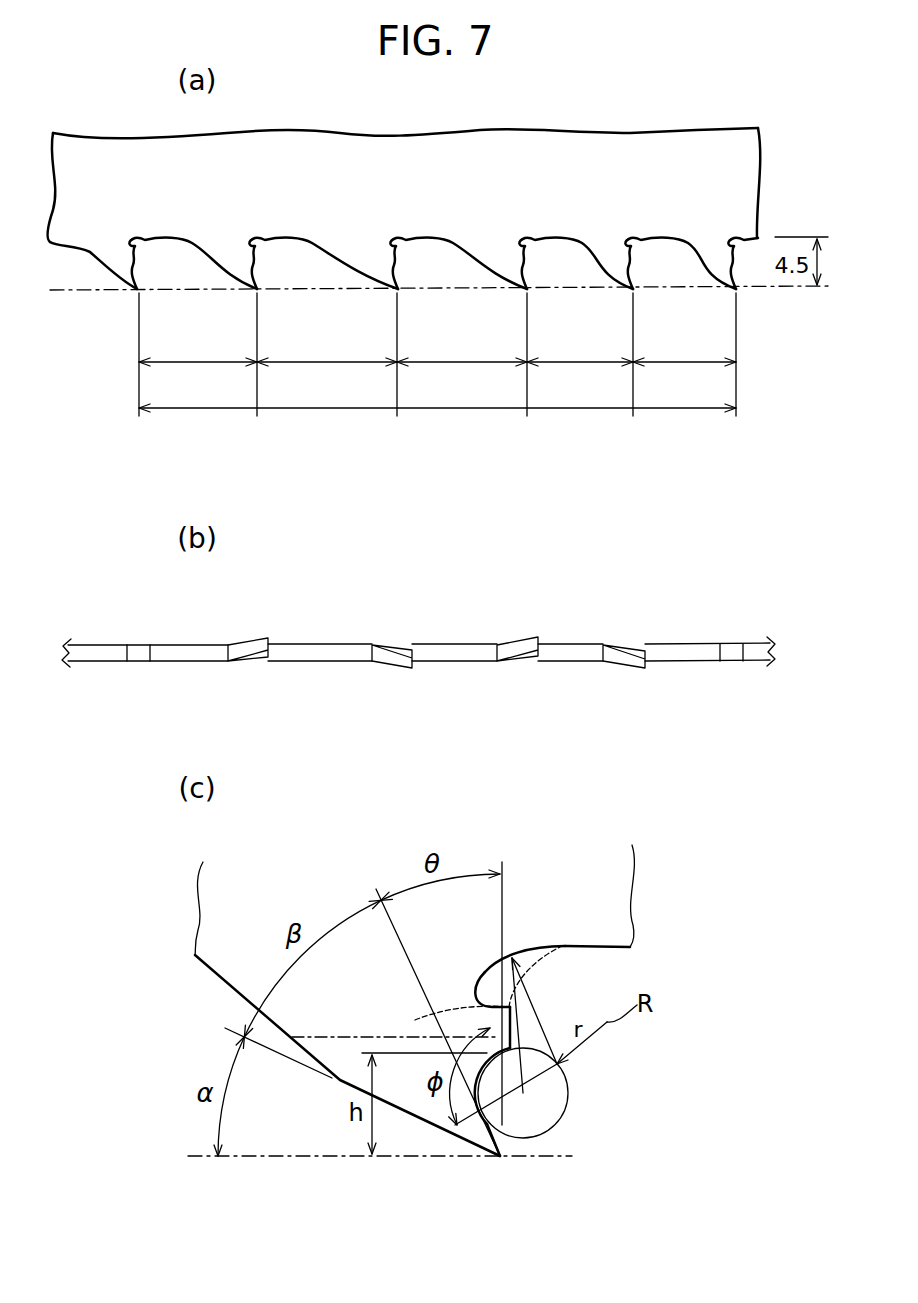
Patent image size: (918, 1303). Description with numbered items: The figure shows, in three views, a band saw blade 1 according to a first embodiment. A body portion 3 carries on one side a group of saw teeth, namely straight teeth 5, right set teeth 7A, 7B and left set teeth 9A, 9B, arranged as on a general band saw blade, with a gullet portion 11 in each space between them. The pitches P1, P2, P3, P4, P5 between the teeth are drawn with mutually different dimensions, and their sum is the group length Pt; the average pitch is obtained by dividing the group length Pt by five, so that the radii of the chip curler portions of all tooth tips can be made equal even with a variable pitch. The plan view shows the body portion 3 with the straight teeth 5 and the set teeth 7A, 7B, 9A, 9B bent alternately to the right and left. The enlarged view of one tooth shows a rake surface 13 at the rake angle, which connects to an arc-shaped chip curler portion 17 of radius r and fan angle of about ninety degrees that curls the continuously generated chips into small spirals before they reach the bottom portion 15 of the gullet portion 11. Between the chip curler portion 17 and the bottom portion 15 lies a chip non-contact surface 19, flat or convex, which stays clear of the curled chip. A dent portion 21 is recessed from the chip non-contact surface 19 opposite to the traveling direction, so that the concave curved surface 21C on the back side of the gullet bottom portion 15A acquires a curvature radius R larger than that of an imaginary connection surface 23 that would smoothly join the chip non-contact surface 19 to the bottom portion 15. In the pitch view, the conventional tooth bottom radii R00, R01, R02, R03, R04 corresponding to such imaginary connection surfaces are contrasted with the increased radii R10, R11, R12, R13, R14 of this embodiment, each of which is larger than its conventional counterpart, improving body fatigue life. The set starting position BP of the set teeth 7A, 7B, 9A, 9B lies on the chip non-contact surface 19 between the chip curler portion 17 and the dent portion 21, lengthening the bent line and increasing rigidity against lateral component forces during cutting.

The band saw blade 1 is at (777, 125).
The body portion 3 is at (753, 150).
The straight teeth 5 is at (118, 290).
The right set tooth 7A is at (613, 288).
The right set tooth 7B is at (370, 292).
The left set tooth 9A is at (508, 288).
The left set tooth 9B is at (232, 292).
The gullet portion 11 is at (172, 253).
The rake surface 13 is at (506, 1145).
The bottom portion 15 is at (560, 956).
The gullet bottom portion 15A is at (545, 955).
The chip curler portion 17 is at (470, 1133).
The chip non-contact surface 19 is at (520, 1025).
The dent portion 21 is at (478, 975).
The concave curved surface 21C is at (492, 962).
The imaginary connection surface 23 is at (447, 1021).
The curvature radius of conventional tooth bottom R00 is at (744, 246).
The curvature radius of conventional tooth bottom R01 is at (643, 247).
The curvature radius of conventional tooth bottom R02 is at (537, 247).
The curvature radius of conventional tooth bottom R03 is at (407, 247).
The curvature radius of conventional tooth bottom R04 is at (266, 249).
The increased curvature radius of tooth bottom R10 is at (736, 241).
The increased curvature radius of tooth bottom R11 is at (633, 241).
The increased curvature radius of tooth bottom R12 is at (527, 241).
The increased curvature radius of tooth bottom R13 is at (398, 241).
The increased curvature radius of tooth bottom R14 is at (257, 241).
The pitch P1 is at (684, 347).
The pitch P2 is at (580, 347).
The pitch P3 is at (462, 347).
The pitch P4 is at (327, 347).
The pitch P5 is at (198, 347).
The group length Pt is at (437, 393).
The set starting position BP is at (325, 1036).